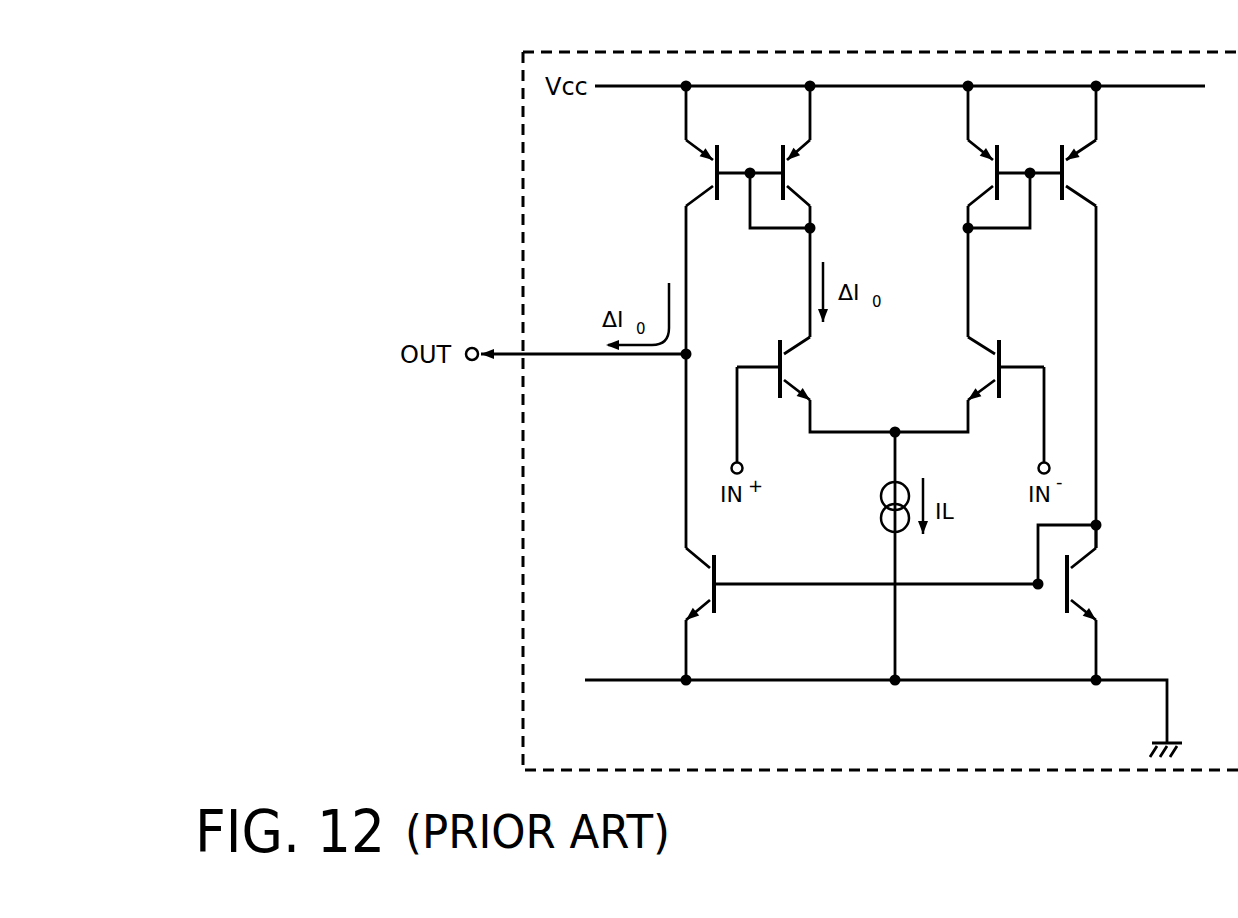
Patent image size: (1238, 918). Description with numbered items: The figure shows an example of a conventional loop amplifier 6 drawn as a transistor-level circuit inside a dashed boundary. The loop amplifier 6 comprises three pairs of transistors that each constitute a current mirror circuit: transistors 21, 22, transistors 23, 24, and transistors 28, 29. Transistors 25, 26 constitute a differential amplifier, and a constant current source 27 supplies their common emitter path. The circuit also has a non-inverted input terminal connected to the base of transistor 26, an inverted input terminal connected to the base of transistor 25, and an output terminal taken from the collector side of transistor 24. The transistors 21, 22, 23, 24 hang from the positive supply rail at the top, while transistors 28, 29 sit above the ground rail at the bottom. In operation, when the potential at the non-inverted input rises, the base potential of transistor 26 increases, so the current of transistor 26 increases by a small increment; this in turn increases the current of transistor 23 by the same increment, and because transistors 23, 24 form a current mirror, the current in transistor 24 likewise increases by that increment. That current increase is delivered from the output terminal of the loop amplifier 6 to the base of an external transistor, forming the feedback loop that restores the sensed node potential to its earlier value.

The loop amplifier 6 is at (902, 52).
The transistor 21 is at (1078, 182).
The transistor 22 is at (985, 178).
The transistor 23 is at (795, 175).
The transistor 24 is at (700, 173).
The transistor 25 is at (983, 372).
The transistor 26 is at (797, 373).
The constant current source 27 is at (908, 526).
The transistor 28 is at (1092, 578).
The transistor 29 is at (693, 584).